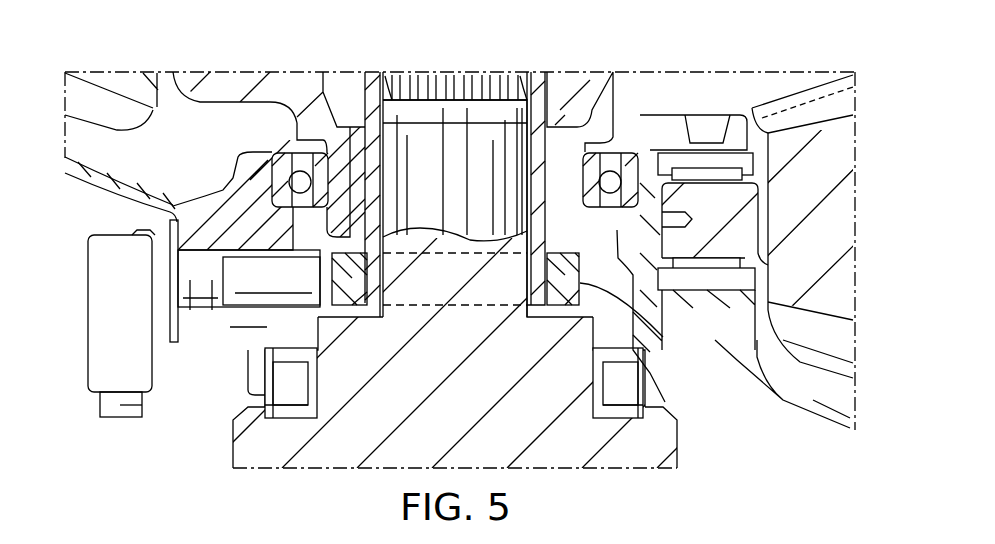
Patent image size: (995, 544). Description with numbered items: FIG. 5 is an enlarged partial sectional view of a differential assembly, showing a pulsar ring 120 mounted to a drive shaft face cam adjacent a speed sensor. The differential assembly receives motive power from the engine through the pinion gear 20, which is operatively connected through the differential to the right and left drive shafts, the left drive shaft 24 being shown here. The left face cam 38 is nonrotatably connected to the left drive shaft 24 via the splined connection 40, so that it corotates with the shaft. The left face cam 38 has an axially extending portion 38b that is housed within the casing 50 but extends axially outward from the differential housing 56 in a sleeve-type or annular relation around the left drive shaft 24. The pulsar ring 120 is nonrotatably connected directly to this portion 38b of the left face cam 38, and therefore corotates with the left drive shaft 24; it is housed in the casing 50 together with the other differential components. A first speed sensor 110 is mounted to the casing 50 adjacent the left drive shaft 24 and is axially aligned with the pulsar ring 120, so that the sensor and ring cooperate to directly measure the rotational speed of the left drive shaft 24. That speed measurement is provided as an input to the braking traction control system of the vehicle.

The pinion gear 20 is at (822, 163).
The left drive shaft 24 is at (470, 107).
The left face cam 38 is at (540, 90).
The portion of the left face cam 38b is at (360, 84).
The splined connection 40 is at (432, 77).
The casing 50 is at (130, 197).
The differential housing 56 is at (243, 77).
The first speed sensor 110 is at (143, 360).
The pulsar ring 120 is at (667, 340).